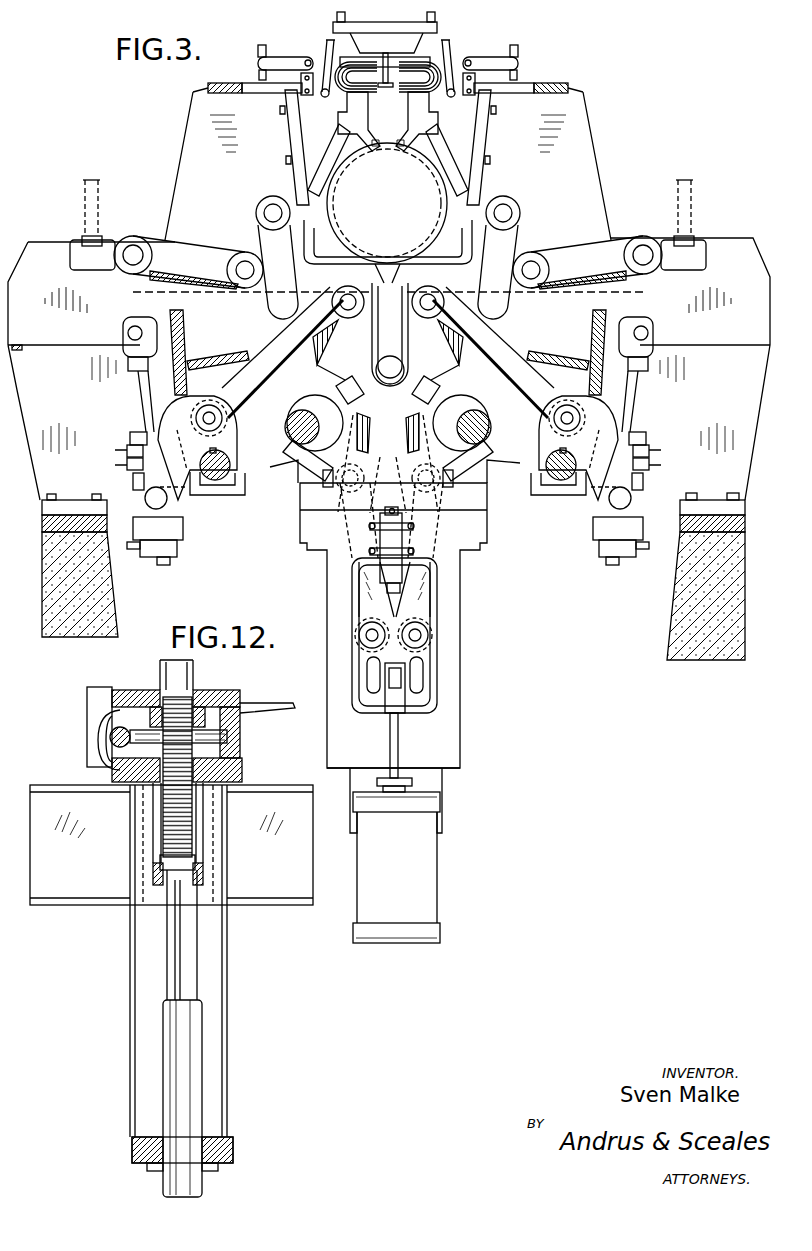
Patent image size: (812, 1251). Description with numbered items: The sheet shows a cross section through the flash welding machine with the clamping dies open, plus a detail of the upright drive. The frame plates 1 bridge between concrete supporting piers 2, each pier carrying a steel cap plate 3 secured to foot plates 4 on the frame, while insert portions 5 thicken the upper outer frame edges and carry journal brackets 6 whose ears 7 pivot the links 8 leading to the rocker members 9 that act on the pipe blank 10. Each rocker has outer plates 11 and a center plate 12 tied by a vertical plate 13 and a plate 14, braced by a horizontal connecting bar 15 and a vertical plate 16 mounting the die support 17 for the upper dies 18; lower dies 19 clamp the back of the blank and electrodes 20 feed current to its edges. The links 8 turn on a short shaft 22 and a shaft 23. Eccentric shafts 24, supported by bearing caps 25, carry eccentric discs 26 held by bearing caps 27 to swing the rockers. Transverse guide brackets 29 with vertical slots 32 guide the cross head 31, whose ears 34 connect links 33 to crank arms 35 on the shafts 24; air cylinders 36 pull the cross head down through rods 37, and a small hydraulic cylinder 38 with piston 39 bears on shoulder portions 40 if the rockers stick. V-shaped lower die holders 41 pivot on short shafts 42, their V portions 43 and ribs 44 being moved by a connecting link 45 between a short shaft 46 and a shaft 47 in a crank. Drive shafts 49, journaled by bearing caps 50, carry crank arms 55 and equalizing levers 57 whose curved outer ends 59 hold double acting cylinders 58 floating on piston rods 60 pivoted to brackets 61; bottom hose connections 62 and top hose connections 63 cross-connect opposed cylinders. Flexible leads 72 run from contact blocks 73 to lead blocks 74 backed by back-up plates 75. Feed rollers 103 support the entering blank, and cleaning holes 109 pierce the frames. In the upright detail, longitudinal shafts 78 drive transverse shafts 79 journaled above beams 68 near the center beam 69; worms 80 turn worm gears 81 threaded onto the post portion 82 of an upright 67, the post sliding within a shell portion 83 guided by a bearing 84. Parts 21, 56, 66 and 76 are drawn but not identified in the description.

In FIG. 3, the frame plates 1 is at (36, 455).
In FIG. 3, the concrete supporting piers 2 is at (42, 572).
In FIG. 3, the steel cap plate 3 is at (42, 523).
In FIG. 3, the foot plates 4 is at (42, 506).
In FIG. 3, the insert portions 5 is at (32, 246).
In FIG. 3, the journal brackets 6 is at (96, 230).
In FIG. 3, the ears 7 is at (118, 242).
In FIG. 3, the links 8 is at (186, 246).
In FIG. 3, the rocker members 9 is at (185, 128).
In FIG. 3, the tubular pipe blank 10 is at (330, 178).
In FIG. 3, the outer plates 11 is at (350, 348).
In FIG. 3, the center plate 12 is at (188, 162).
In FIG. 3, the vertical plate 13 is at (596, 330).
In FIG. 3, the plate 14 is at (230, 357).
In FIG. 3, the horizontal connecting bar 15 is at (272, 92).
In FIG. 3, the vertical plate 16 is at (292, 165).
In FIG. 3, the die support 17 is at (300, 137).
In FIG. 3, the upper dies 18 is at (443, 150).
In FIG. 3, the lower dies 19 is at (345, 264).
In FIG. 3, the electrodes 20 is at (380, 143).
In FIG. 3, the lever 21 is at (278, 58).
In FIG. 3, the short shaft 22 is at (134, 252).
In FIG. 3, the shaft 23 is at (245, 268).
In FIG. 3, the eccentric shafts 24 is at (300, 470).
In FIG. 3, the bearing caps 25 is at (397, 475).
In FIG. 3, the eccentric discs 26 is at (440, 413).
In FIG. 3, the bearing caps 27 is at (420, 438).
In FIG. 3, the transverse guide brackets 29 is at (460, 680).
In FIG. 3, the cross head 31 is at (362, 673).
In FIG. 3, the vertical slots 32 is at (430, 697).
In FIG. 3, the links 33 is at (407, 600).
In FIG. 3, the ears 34 is at (425, 622).
In FIG. 3, the crank arms 35 is at (395, 614).
In FIG. 3, the air cylinders 36 is at (437, 870).
In FIG. 3, the rods 37 is at (398, 740).
In FIG. 3, the small hydraulic cylinder 38 is at (380, 534).
In FIG. 3, the piston 39 is at (397, 592).
In FIG. 3, the horizontal shoulder portions 40 is at (397, 663).
In FIG. 3, the lower die holders 41 is at (276, 292).
In FIG. 3, the short shafts 42 is at (272, 212).
In FIG. 3, the V portions 43 is at (314, 242).
In FIG. 3, the ribs 44 is at (283, 310).
In FIG. 3, the connecting link 45 is at (292, 370).
In FIG. 3, the short shaft 46 is at (348, 302).
In FIG. 3, the shaft 47 is at (209, 412).
In FIG. 3, the drive shafts 49 is at (216, 482).
In FIG. 3, the bearing caps 50 is at (234, 490).
In FIG. 3, the crank arms 55 is at (242, 440).
In FIG. 3, the shaft 56 is at (208, 88).
In FIG. 3, the equalizing levers 57 is at (177, 437).
In FIG. 3, the double acting cylinders 58 is at (118, 465).
In FIG. 3, the downwardly curving outer ends 59 is at (132, 486).
In FIG. 3, the piston rods 60 is at (138, 387).
In FIG. 3, the brackets 61 is at (145, 322).
In FIG. 3, the bottom hose connections 62 is at (148, 565).
In FIG. 3, the top hose connections 63 is at (118, 452).
In FIG. 3, the post 66 is at (88, 186).
In FIG. 12, the uprights 67 is at (128, 1000).
In FIG. 12, the beams 68 is at (152, 842).
In FIG. 12, the center beam 69 is at (80, 905).
In FIG. 3, the flexible leads 72 is at (368, 72).
In FIG. 3, the contact blocks 73 is at (326, 60).
In FIG. 3, the lead blocks 74 is at (416, 93).
In FIG. 3, the back-up plates 75 is at (340, 118).
In FIG. 3, the rod 76 is at (324, 44).
In FIG. 12, the longitudinal shafts 78 is at (276, 703).
In FIG. 12, the transverse shafts 79 is at (98, 736).
In FIG. 12, the worms 80 is at (110, 740).
In FIG. 12, the worm gears 81 is at (230, 738).
In FIG. 12, the post portion 82 is at (170, 1090).
In FIG. 12, the shell portion 83 is at (228, 1020).
In FIG. 12, the bearing 84 is at (212, 1133).
In FIG. 3, the feed rollers 103 is at (395, 334).
In FIG. 3, the cleaning holes 109 is at (404, 358).